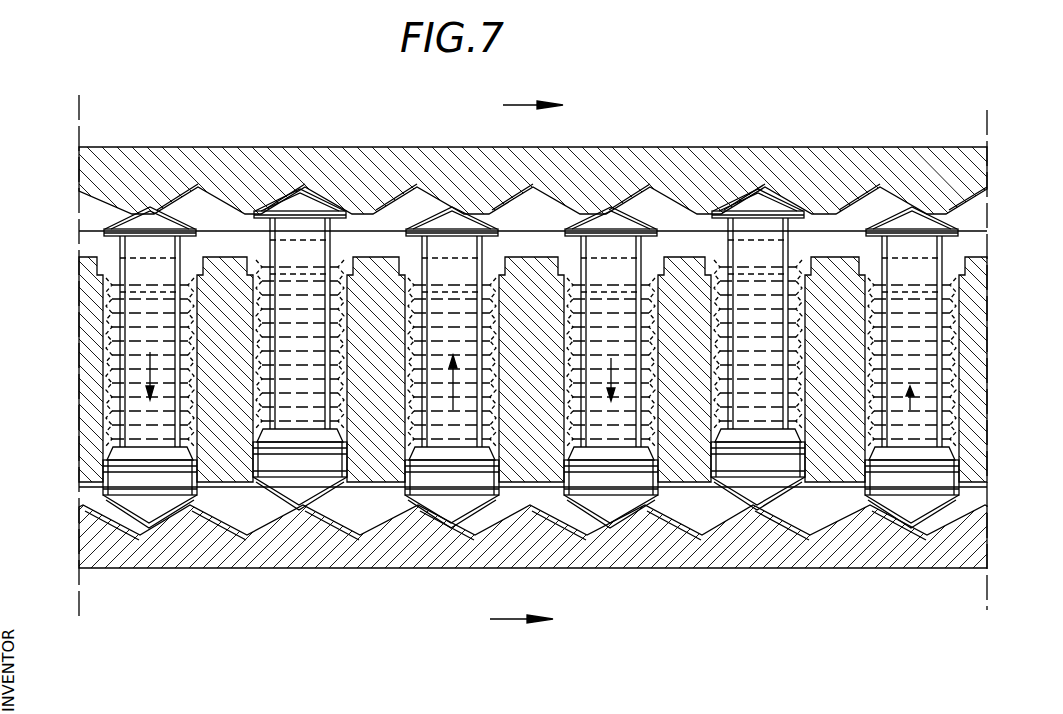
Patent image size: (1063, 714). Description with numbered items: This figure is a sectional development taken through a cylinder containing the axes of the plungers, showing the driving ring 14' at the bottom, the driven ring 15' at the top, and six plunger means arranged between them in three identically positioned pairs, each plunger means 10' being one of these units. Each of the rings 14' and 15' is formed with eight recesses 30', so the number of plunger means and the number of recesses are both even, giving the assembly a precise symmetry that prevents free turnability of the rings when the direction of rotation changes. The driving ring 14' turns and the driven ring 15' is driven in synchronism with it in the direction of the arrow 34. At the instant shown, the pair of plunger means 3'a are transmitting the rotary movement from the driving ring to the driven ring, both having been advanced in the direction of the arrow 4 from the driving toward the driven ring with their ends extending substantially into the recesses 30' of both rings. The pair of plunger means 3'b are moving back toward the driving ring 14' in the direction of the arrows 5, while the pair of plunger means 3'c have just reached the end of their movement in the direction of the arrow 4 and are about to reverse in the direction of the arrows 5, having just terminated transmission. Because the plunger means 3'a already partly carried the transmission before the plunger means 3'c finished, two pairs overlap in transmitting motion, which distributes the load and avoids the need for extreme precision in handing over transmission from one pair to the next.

The driven ring 15' is at (533, 154).
The driving ring 14' is at (533, 566).
The piston assembly 10' is at (531, 411).
The recess 30' is at (858, 162).
The arrow 34 is at (506, 361).
The pair of plunger means 3'a is at (606, 358).
The pair of plunger means 3'b is at (500, 358).
The pair of plunger means 3'c is at (454, 358).
The arrow 5 is at (378, 364).
The arrow 4 is at (675, 370).